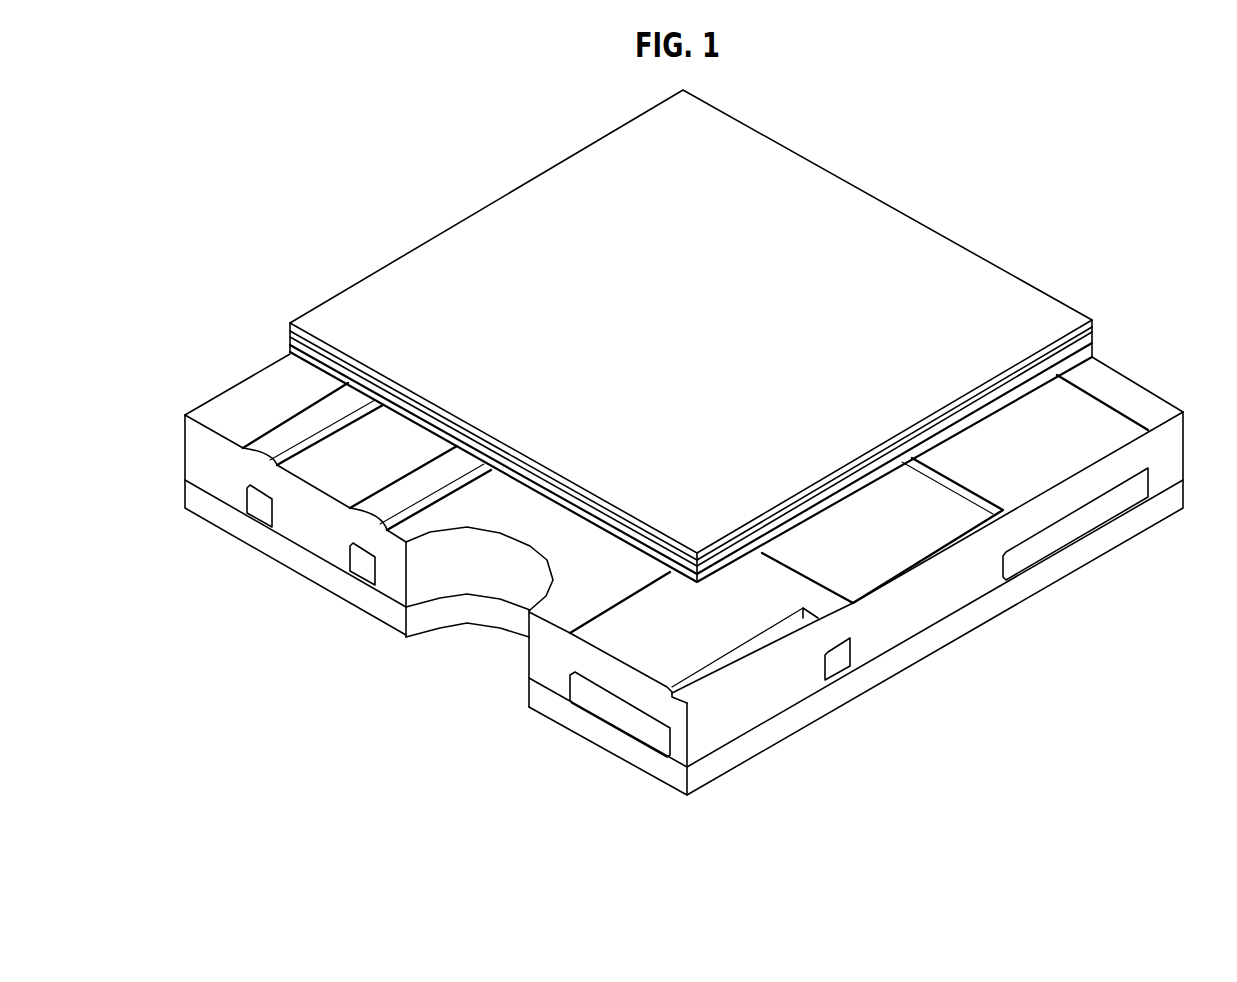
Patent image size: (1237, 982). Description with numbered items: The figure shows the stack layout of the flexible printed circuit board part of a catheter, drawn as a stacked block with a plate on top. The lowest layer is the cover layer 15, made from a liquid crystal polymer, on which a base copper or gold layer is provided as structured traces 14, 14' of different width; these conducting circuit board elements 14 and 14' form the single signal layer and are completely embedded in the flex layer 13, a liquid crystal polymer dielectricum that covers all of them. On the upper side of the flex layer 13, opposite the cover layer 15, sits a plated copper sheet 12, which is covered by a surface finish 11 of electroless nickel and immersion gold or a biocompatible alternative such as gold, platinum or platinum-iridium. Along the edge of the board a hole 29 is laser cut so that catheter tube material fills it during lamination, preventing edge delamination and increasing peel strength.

The surface finish 11 is at (943, 272).
The plated copper sheet 12 is at (1057, 363).
The flex layer 13 is at (1145, 415).
The structured trace 14 is at (867, 683).
The structured trace 14' is at (535, 668).
The cover layer 15 is at (948, 627).
The hole 29 is at (502, 585).